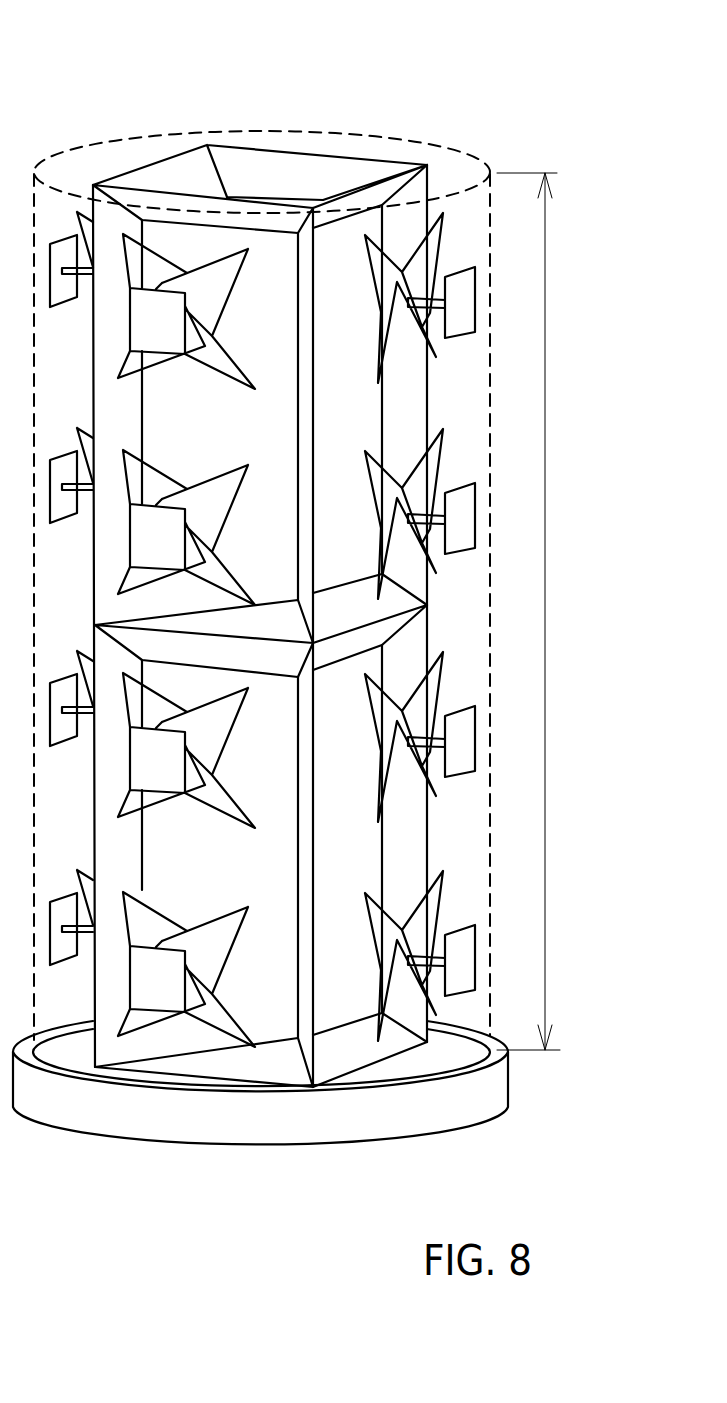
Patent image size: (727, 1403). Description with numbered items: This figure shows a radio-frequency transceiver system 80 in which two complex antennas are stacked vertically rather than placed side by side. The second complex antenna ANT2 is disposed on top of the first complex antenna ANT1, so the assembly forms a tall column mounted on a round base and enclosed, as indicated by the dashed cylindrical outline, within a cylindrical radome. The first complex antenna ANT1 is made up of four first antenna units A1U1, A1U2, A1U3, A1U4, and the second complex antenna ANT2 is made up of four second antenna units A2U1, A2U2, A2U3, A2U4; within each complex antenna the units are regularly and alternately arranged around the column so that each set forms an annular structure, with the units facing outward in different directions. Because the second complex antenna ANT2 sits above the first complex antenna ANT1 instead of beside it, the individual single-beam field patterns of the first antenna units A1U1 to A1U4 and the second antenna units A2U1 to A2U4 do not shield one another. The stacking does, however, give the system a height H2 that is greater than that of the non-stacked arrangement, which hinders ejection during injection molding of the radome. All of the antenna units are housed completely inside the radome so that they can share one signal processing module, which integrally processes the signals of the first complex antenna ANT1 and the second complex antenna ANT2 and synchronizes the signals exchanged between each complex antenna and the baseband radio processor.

The radio-frequency transceiver system 80 is at (500, 93).
The first complex antenna ANT1 is at (405, 1197).
The second complex antenna ANT2 is at (405, 82).
The first antenna unit A1U1 is at (197, 1056).
The first antenna unit A1U2 is at (45, 1000).
The first antenna unit A1U3 is at (283, 1152).
The first antenna unit A1U4 is at (364, 1054).
The second antenna unit A2U1 is at (207, 229).
The second antenna unit A2U2 is at (47, 213).
The second antenna unit A2U3 is at (291, 169).
The second antenna unit A2U4 is at (360, 224).
The height H2 is at (543, 611).